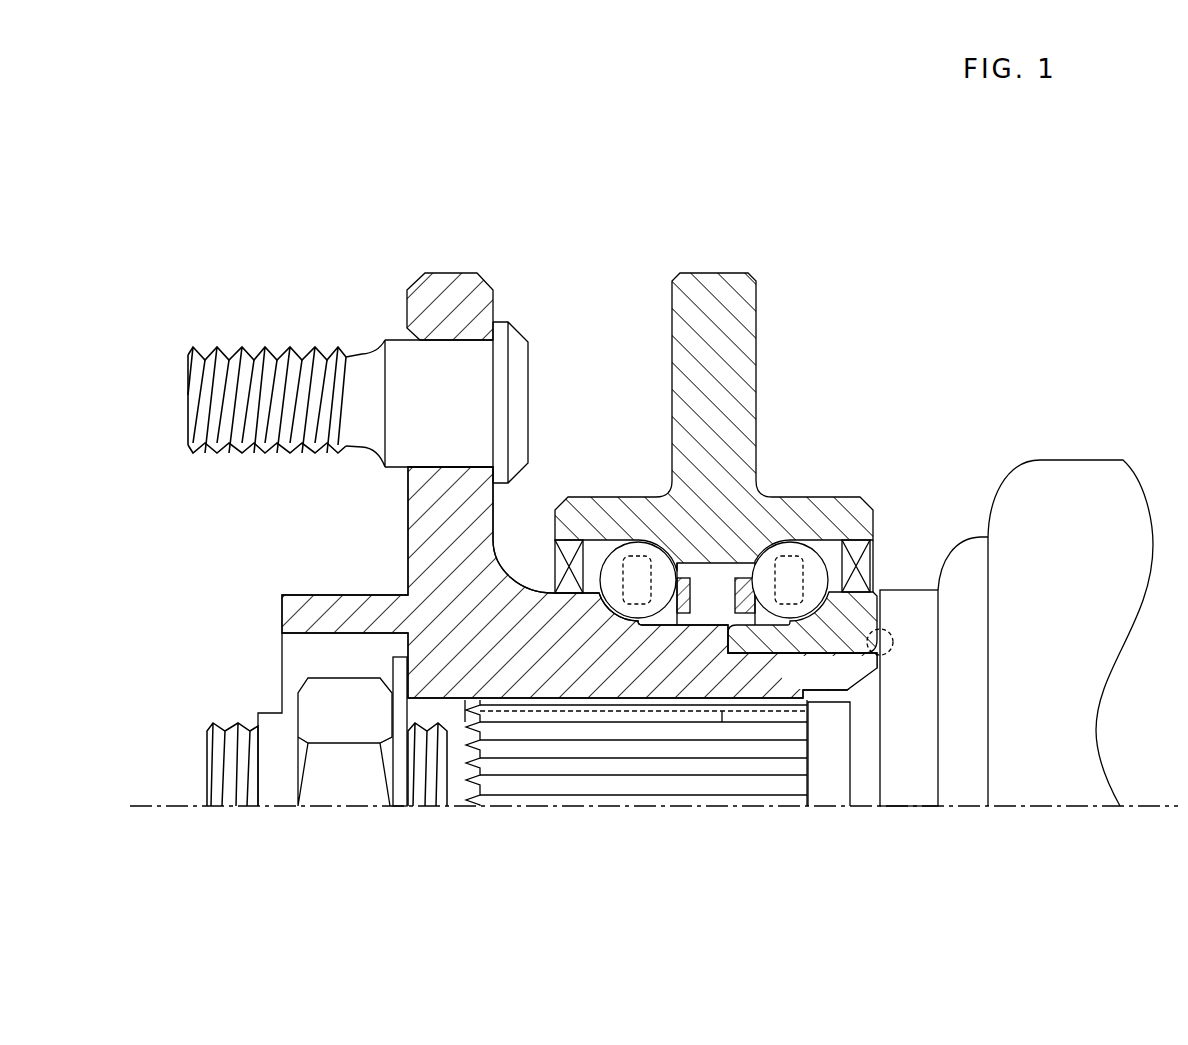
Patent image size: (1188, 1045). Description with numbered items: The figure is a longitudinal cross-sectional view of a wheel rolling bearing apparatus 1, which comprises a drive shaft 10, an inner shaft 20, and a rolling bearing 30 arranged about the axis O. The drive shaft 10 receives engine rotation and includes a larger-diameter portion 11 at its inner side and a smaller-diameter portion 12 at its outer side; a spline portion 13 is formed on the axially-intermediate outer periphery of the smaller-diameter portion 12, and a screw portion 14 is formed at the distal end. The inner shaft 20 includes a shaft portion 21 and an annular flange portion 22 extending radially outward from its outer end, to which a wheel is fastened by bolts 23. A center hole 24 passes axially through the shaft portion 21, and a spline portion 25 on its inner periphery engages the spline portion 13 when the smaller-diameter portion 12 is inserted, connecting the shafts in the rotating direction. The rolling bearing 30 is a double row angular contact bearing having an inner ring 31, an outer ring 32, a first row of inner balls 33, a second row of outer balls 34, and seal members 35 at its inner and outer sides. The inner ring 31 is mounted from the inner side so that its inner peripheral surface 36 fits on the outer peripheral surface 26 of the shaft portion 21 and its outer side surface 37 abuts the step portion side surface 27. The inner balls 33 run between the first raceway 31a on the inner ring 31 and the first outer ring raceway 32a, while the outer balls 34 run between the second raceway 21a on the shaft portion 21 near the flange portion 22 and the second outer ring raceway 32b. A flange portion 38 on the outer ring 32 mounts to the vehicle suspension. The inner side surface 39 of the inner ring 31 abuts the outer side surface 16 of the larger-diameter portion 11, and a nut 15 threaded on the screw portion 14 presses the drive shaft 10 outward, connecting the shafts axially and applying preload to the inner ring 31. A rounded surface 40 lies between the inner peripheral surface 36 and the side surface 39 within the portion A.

The wheel rolling bearing apparatus 1 is at (800, 264).
The drive shaft 10 is at (1000, 448).
The larger-diameter portion 11 is at (910, 590).
The smaller-diameter portion 12 is at (457, 803).
The spline portion 13 is at (612, 765).
The screw portion 14 is at (247, 804).
The nut 15 is at (345, 795).
The outer side surface 16 is at (892, 645).
The inner shaft 20 is at (500, 533).
The shaft portion 21 is at (651, 675).
The second raceway 21a is at (612, 603).
The flange portion 22 is at (439, 273).
The bolt 23 is at (530, 360).
The center hole 24 is at (568, 711).
The spline portion 25 is at (722, 712).
The outer peripheral surface 26 is at (844, 647).
The step portion side surface 27 is at (728, 628).
The rolling bearing 30 is at (714, 445).
The inner ring 31 is at (842, 655).
The first raceway 31a is at (794, 595).
The outer ring 32 is at (748, 395).
The first outer ring raceway 32a is at (774, 541).
The second outer ring raceway 32b is at (659, 541).
The inner balls 33 is at (795, 540).
The outer balls 34 is at (628, 540).
The seal member 35 is at (553, 562).
The inner peripheral surface 36 is at (803, 656).
The outer side surface 37 is at (727, 634).
The flange portion 38 is at (757, 345).
The inner side surface 39 is at (884, 614).
The rounded surface 40 is at (888, 656).
The portion A is at (886, 666).
The axis O is at (1158, 806).